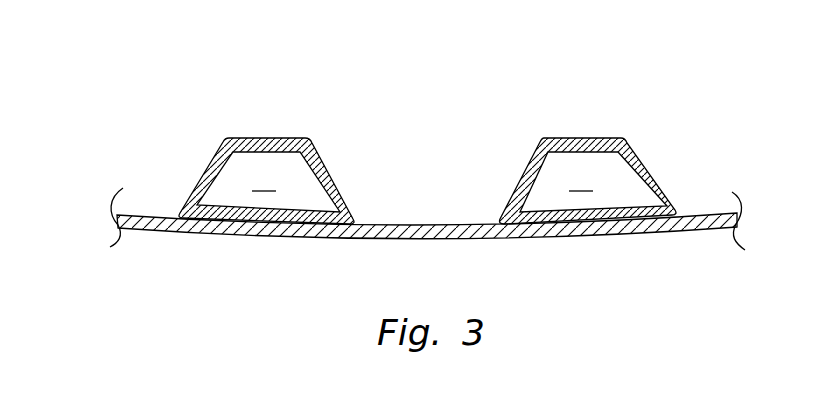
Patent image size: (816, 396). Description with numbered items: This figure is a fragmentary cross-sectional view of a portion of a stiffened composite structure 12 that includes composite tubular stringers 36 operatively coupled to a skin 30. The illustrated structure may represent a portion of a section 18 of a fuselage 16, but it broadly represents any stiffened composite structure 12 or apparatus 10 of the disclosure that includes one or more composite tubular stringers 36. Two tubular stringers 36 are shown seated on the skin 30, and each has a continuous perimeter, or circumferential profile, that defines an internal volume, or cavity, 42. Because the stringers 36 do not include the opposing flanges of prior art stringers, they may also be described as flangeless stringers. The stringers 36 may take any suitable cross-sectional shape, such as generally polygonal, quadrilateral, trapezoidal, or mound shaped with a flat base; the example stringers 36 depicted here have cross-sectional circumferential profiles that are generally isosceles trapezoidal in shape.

The apparatus 10 is at (655, 45).
The stiffened composite structure 12 is at (587, 60).
The fuselage 16 is at (488, 53).
The section 18 is at (513, 82).
The skin 30 is at (453, 240).
The composite tubular stringer 36 is at (300, 140).
The internal volume 42 is at (264, 181).